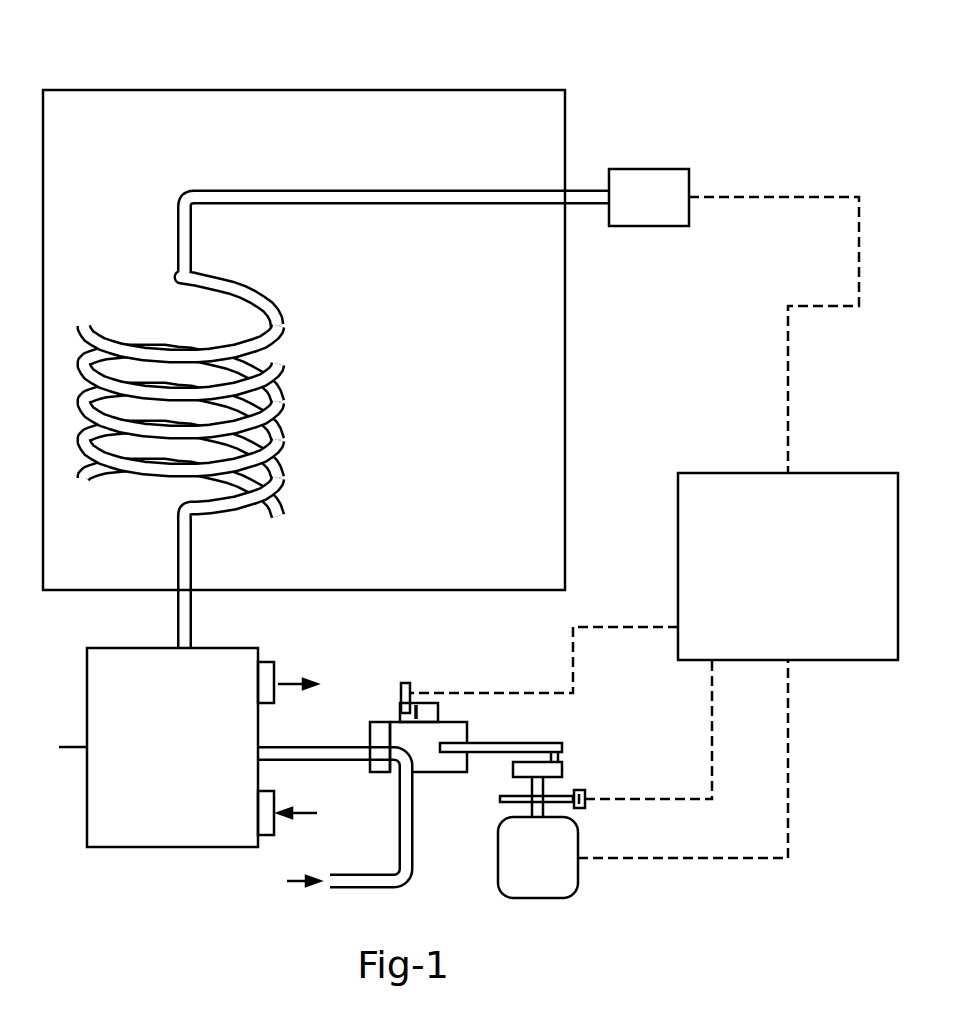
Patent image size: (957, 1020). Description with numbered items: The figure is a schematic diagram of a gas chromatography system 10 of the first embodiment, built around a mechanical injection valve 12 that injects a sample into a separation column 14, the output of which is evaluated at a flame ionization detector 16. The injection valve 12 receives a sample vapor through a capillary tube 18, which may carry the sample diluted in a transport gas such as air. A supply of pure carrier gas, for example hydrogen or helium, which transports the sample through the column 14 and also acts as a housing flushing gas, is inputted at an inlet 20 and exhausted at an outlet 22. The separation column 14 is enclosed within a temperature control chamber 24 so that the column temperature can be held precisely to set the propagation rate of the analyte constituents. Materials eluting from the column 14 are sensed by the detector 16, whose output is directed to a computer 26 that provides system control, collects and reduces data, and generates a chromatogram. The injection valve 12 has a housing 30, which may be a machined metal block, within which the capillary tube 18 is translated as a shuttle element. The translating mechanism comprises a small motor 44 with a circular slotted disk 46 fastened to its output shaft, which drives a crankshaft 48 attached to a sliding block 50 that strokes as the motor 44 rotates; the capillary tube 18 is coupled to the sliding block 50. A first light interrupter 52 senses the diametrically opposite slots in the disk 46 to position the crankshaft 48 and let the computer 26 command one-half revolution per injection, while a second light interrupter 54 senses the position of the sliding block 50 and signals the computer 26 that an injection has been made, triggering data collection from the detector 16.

The gas chromatography system 10 is at (348, 50).
The injection valve 12 is at (112, 824).
The separation column 14 is at (285, 380).
The flame ionization detector 16 is at (668, 169).
The capillary tube 18 is at (370, 887).
The inlet 20 is at (275, 808).
The outlet 22 is at (275, 672).
The temperature control chamber 24 is at (565, 398).
The computer 26 is at (838, 473).
The housing 30 is at (162, 822).
The motor 44 is at (533, 898).
The circular slotted disk 46 is at (563, 797).
The crankshaft 48 is at (515, 743).
The sliding block 50 is at (440, 772).
The first light interrupter 52 is at (590, 806).
The second light interrupter 54 is at (405, 683).